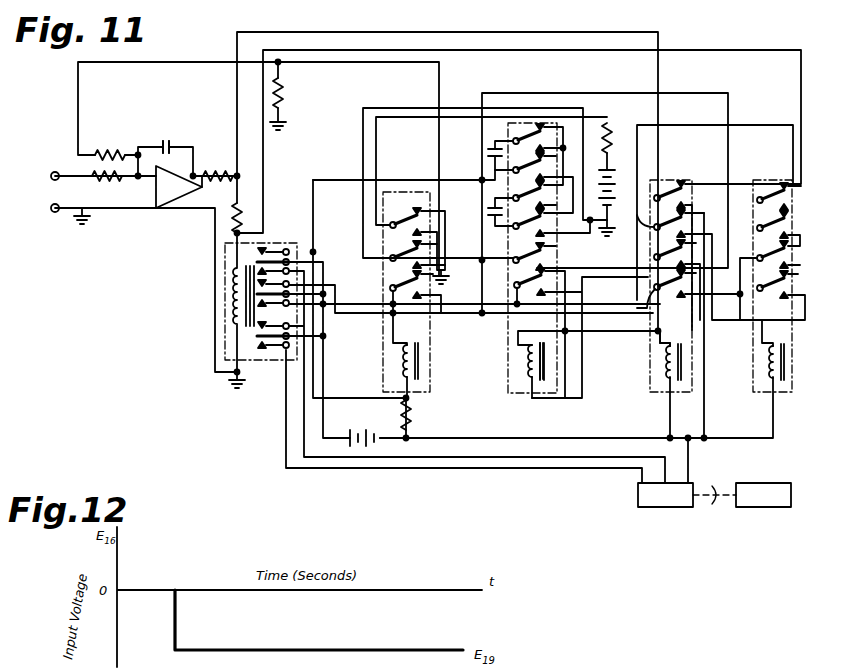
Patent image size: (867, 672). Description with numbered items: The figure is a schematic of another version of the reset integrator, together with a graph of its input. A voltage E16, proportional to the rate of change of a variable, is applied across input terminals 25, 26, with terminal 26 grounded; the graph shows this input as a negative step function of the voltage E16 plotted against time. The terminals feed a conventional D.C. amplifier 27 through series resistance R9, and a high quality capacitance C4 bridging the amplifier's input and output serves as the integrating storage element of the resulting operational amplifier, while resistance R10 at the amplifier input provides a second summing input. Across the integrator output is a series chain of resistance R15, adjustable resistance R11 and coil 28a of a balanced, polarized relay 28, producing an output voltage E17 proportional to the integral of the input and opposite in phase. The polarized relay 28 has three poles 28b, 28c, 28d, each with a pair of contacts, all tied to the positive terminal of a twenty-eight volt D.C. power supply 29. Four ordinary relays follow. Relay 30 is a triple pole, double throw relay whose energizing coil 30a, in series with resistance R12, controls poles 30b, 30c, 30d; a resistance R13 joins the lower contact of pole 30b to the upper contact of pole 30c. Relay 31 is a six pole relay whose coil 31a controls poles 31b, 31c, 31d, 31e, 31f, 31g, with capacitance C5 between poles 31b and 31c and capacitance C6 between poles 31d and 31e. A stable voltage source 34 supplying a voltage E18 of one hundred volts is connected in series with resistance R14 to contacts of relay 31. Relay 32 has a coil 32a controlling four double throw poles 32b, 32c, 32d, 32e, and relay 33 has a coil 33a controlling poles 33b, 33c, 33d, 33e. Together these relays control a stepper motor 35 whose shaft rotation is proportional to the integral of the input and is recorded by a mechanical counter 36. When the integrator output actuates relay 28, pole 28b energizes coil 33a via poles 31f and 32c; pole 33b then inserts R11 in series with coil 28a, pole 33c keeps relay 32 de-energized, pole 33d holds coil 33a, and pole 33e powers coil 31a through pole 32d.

The input terminal 25 is at (55, 170).
The input terminal 26 is at (53, 212).
The input voltage E16 is at (36, 192).
The D.C. amplifier 27 is at (179, 187).
The output voltage E17 is at (212, 182).
The series resistance R9 is at (114, 178).
The resistance R10 is at (109, 153).
The capacitance C4 is at (168, 146).
The resistance R15 is at (211, 172).
The adjustable resistance R11 is at (238, 218).
The resistance R13 is at (280, 95).
The polarized relay 28 is at (260, 360).
The coil 28a is at (232, 300).
The pole 28b is at (262, 262).
The pole 28c is at (264, 296).
The pole 28d is at (262, 336).
The D.C. power supply 29 is at (366, 430).
The resistance R12 is at (409, 412).
The relay 30 is at (430, 368).
The energizing coil 30a is at (402, 360).
The pole 30b is at (392, 222).
The pole 30c is at (390, 256).
The pole 30d is at (390, 288).
The relay 31 is at (517, 394).
The energizing coil 31a is at (528, 367).
The pole 31b is at (512, 138).
The pole 31c is at (512, 173).
The pole 31d is at (512, 198).
The pole 31e is at (512, 228).
The pole 31f is at (512, 262).
The pole 31g is at (514, 290).
The capacitance C5 is at (486, 156).
The capacitance C6 is at (486, 214).
The resistance R14 is at (610, 134).
The stable voltage source 34 is at (622, 172).
The voltage E18 is at (621, 157).
The relay 32 is at (650, 390).
The energizing coil 32a is at (666, 361).
The pole 32b is at (659, 196).
The pole 32c is at (654, 227).
The pole 32d is at (660, 283).
The pole 32e is at (660, 302).
The relay 33 is at (752, 385).
The energizing coil 33a is at (768, 360).
The pole 33b is at (760, 197).
The pole 33c is at (760, 227).
The pole 33d is at (757, 258).
The pole 33e is at (762, 318).
The stepper motor 35 is at (665, 495).
The mechanical counter 36 is at (742, 505).